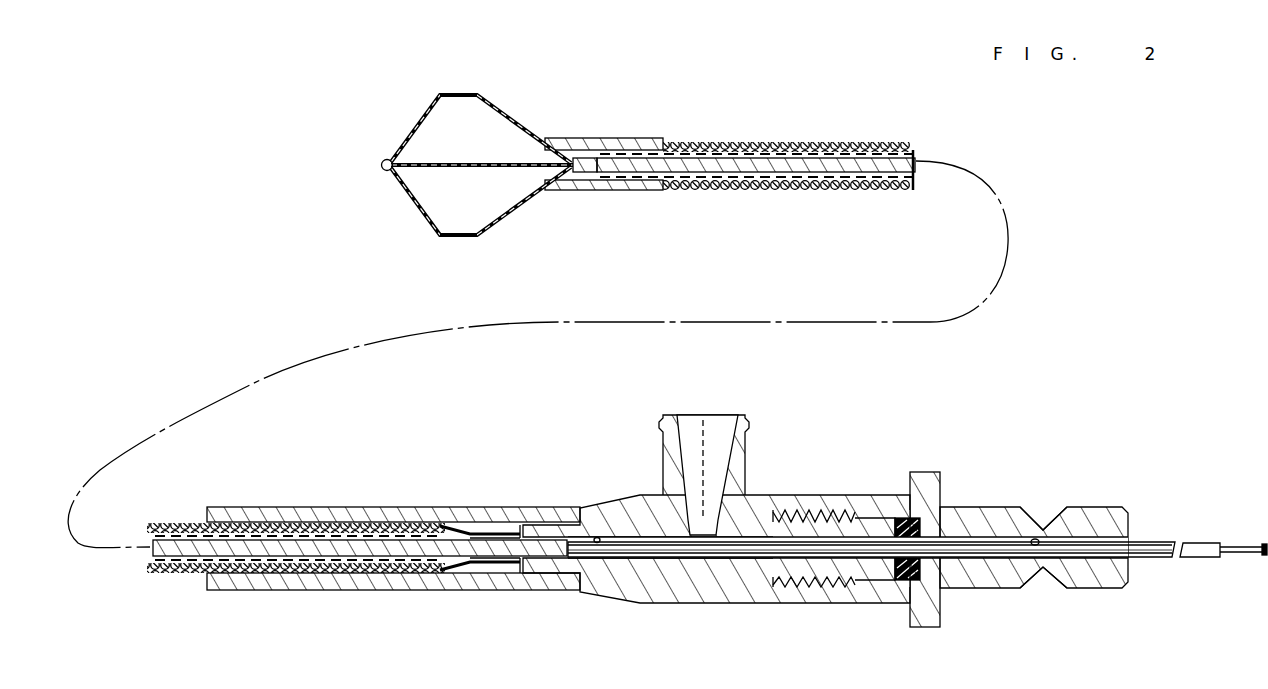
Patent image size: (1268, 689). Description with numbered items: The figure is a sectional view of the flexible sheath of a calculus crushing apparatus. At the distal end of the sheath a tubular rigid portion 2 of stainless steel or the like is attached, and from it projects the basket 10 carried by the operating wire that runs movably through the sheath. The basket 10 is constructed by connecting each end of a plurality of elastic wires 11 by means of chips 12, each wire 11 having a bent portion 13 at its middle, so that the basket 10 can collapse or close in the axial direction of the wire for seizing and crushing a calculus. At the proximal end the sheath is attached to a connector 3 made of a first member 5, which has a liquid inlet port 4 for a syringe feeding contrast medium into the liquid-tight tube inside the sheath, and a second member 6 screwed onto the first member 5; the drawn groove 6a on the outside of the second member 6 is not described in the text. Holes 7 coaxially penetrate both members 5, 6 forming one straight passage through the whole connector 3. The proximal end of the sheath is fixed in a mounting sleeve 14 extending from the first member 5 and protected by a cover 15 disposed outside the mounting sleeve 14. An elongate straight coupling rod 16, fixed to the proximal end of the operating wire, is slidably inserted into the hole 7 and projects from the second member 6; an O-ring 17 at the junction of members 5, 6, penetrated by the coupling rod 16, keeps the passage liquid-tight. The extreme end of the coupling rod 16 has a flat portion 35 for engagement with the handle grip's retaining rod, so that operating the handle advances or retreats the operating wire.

The tubular rigid portion 2 is at (530, 183).
The connector 3 is at (787, 604).
The liquid inlet port 4 is at (705, 430).
The first member 5 is at (692, 603).
The second member 6 is at (980, 590).
The groove of cap nut 6a is at (1035, 590).
The through hole 7 is at (597, 535).
The basket 10 is at (461, 163).
The elastic wires 11 is at (500, 120).
The chips 12 is at (404, 199).
The bent portion 13 is at (477, 93).
The mounting sleeve 14 is at (463, 577).
The cover 15 is at (305, 507).
The coupling rod 16 is at (838, 562).
The O-ring 17 is at (900, 582).
The flat portion 35 is at (1245, 557).